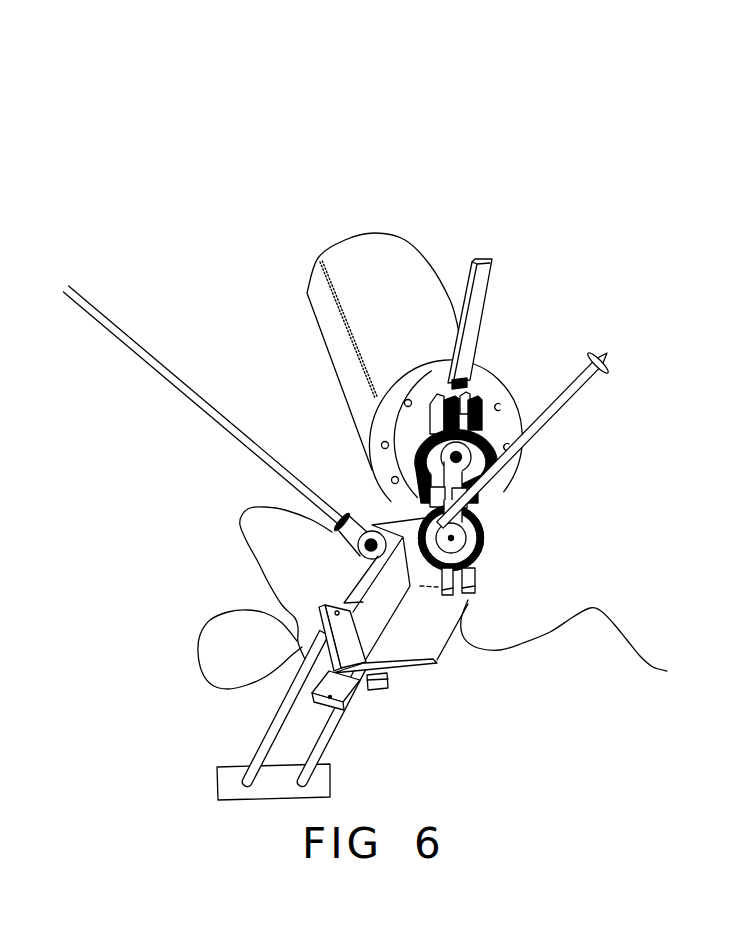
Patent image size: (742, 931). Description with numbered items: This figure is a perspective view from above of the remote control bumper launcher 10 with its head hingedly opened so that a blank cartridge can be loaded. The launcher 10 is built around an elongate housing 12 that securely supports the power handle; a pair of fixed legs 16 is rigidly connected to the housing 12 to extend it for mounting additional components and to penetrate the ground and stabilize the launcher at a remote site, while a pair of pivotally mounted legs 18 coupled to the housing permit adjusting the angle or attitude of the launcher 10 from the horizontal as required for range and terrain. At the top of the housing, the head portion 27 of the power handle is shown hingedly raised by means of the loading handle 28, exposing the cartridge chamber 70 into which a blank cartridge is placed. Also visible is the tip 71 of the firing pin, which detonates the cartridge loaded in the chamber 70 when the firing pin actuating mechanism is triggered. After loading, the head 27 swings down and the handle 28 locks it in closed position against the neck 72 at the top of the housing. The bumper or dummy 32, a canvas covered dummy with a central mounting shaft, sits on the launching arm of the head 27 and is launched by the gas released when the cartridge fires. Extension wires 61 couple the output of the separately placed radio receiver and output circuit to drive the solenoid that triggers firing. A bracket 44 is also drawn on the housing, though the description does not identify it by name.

The bumper launcher 10 is at (637, 292).
The elongate housing 12 is at (446, 645).
The fixed legs 16 is at (270, 733).
The pivotally mounted legs 18 is at (252, 430).
The head portion 27 is at (516, 418).
The loading handle 28 is at (492, 279).
The bumper or dummy 32 is at (355, 232).
The mounting bracket 44 is at (385, 692).
The extension wires 61 is at (620, 627).
The cartridge chamber 70 is at (462, 458).
The tip of the firing pin 71 is at (453, 538).
The neck 72 is at (477, 582).